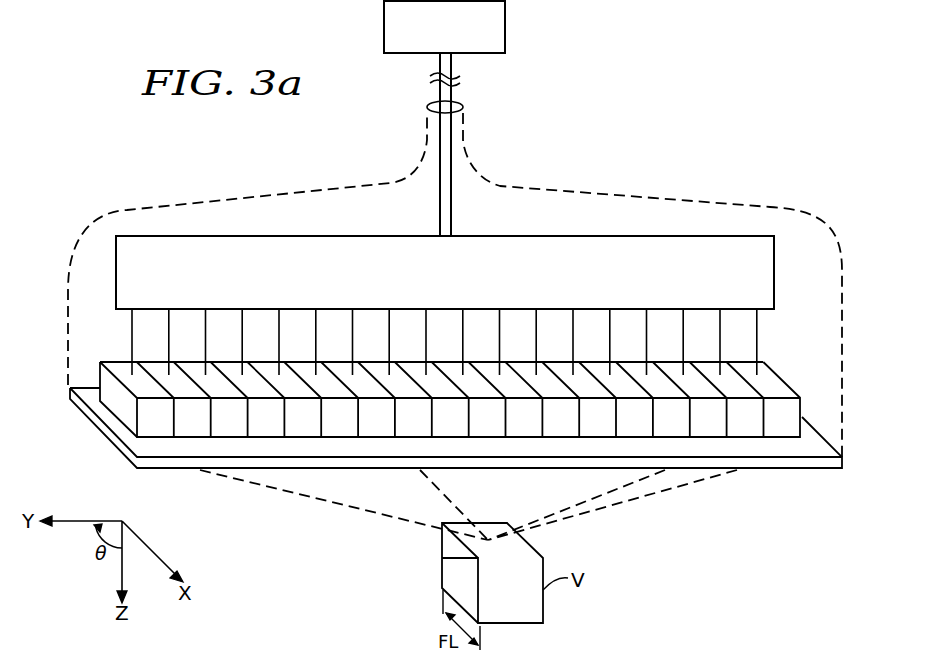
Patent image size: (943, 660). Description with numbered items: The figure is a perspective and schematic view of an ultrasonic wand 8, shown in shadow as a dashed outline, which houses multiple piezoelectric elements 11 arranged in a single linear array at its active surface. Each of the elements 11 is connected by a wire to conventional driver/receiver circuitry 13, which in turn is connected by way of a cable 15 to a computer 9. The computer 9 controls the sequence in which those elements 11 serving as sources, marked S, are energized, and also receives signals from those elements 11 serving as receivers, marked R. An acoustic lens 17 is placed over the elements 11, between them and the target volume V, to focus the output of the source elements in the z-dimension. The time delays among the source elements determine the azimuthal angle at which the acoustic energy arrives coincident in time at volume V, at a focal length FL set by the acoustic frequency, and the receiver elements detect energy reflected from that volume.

The wand 8 is at (652, 200).
The computer 9 is at (384, 22).
The piezoelectric elements 11 is at (117, 367).
The driver/receiver circuitry 13 is at (435, 298).
The cable 15 is at (440, 70).
The acoustic lens 17 is at (803, 470).